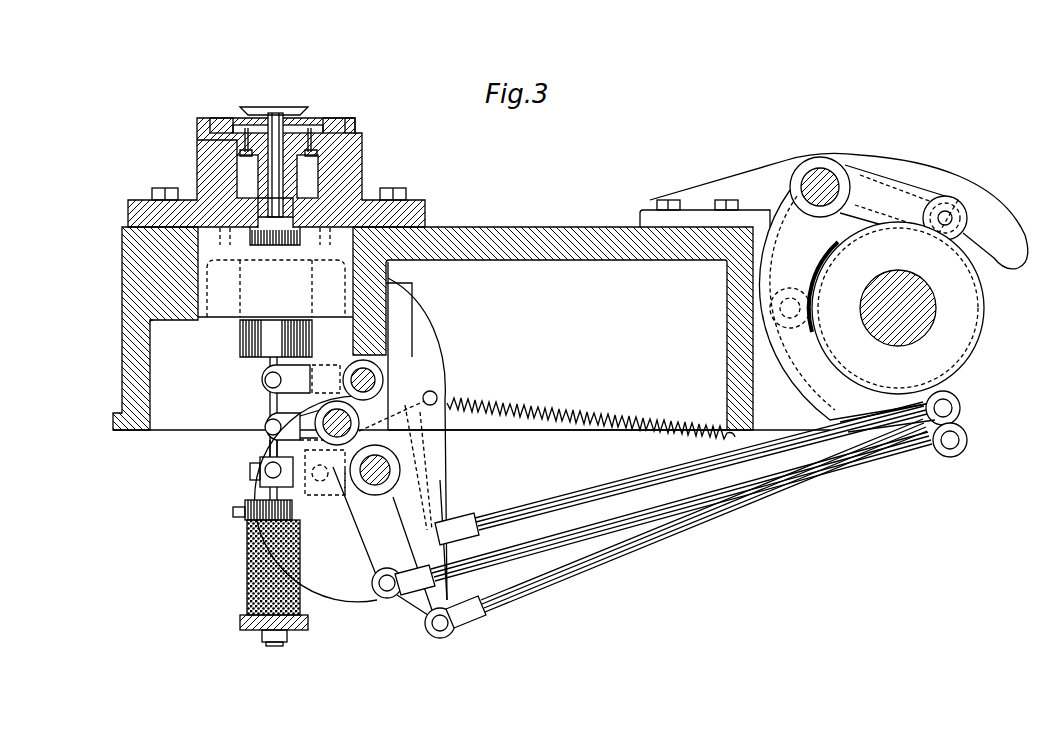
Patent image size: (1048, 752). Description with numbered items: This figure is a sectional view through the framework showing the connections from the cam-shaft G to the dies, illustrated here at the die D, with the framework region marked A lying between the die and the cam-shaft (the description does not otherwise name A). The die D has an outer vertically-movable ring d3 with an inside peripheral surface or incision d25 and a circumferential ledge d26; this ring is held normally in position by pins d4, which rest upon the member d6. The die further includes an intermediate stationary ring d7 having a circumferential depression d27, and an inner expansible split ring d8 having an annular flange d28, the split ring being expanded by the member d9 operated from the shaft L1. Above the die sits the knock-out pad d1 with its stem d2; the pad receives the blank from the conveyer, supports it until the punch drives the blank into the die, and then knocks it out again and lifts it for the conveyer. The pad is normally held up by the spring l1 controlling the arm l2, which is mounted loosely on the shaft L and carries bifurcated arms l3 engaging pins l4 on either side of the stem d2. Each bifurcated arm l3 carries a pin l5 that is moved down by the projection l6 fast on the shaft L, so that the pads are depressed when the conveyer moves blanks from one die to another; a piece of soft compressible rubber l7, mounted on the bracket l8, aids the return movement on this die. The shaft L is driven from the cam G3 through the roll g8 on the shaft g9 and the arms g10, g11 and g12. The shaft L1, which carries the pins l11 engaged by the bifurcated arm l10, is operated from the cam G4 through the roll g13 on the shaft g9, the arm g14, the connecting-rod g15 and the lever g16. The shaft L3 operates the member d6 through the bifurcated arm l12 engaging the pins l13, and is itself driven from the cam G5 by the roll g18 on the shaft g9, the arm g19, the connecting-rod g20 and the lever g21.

The die D is at (362, 160).
The knock-out pad d1 is at (280, 112).
The stem d2 is at (288, 193).
The outer vertically-movable ring d3 is at (228, 120).
The pins d4 is at (360, 224).
The member d6 is at (157, 320).
The intermediate stationary ring d7 is at (205, 150).
The inner expansible split ring d8 is at (312, 136).
The member d9 is at (250, 405).
The inside peripheral surface or incision d25 is at (215, 128).
The circumferential ledge d26 is at (337, 128).
The circumferential depression d27 is at (262, 106).
The annular flange d28 is at (352, 128).
The chamber A is at (557, 346).
The shaft L is at (400, 468).
The shaft L1 is at (350, 427).
The shaft L3 is at (367, 377).
The spring l1 is at (574, 412).
The arm l2 is at (437, 398).
The bifurcated arms l3 is at (258, 485).
The pin l4 is at (262, 470).
The pin l5 is at (321, 485).
The projection l6 is at (352, 492).
The piece of soft compressible rubber l7 is at (247, 580).
The bracket l8 is at (250, 633).
The bifurcated arm l10 is at (255, 447).
The pins l11 is at (262, 430).
The bifurcated arm l12 is at (288, 375).
The pins l13 is at (265, 378).
The cam-shaft G is at (920, 325).
The cam G3 is at (967, 273).
The cam G4 is at (977, 313).
The cam G5 is at (963, 370).
The roll g8 is at (953, 215).
The shaft g9 is at (822, 172).
The arm g10 is at (773, 282).
The arm g11 is at (631, 552).
The arm g12 is at (422, 608).
The roll g13 is at (967, 222).
The arm g14 is at (815, 402).
The connecting-rod g15 is at (547, 555).
The lever g16 is at (341, 575).
The roll g18 is at (775, 315).
The arm g19 is at (916, 400).
The connecting-rod g20 is at (603, 490).
The lever g21 is at (433, 487).